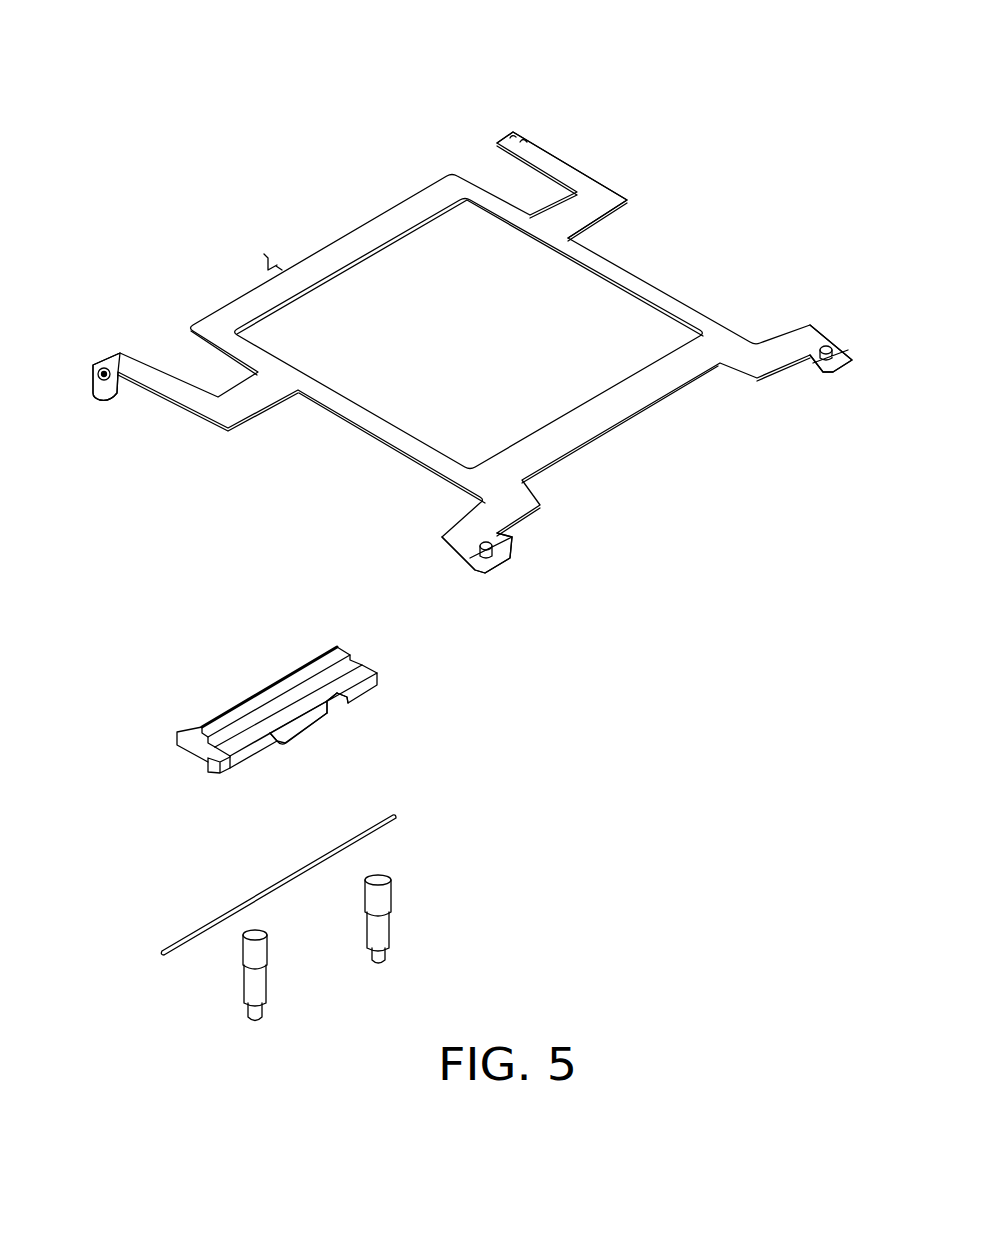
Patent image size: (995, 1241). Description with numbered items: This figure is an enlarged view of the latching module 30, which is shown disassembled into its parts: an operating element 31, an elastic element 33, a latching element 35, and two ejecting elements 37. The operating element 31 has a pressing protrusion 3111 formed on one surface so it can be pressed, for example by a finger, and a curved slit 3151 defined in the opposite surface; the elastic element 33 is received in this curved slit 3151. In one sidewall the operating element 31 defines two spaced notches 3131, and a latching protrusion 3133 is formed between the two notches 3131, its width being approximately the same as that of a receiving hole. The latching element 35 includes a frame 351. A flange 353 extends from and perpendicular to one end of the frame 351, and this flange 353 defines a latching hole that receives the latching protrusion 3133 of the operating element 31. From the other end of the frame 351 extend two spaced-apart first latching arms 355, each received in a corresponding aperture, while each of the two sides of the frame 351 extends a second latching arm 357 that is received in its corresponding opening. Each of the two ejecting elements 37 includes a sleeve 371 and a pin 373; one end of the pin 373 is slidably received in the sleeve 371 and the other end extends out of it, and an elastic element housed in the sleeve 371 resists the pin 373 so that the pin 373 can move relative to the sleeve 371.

The latching module 30 is at (318, 52).
The latching element 35 is at (388, 178).
The frame 351 is at (655, 293).
The flange 353 is at (312, 238).
The first latching arm 355 is at (830, 366).
The second latching arm 357 is at (113, 358).
The operating element 31 is at (268, 658).
The pressing protrusion 3111 is at (337, 650).
The notch 3131 is at (337, 708).
The latching protrusion 3133 is at (300, 726).
The curved slit 3151 is at (200, 760).
The elastic element 33 is at (398, 818).
The ejecting element 37 is at (265, 940).
The sleeve 371 is at (383, 897).
The pin 373 is at (380, 960).